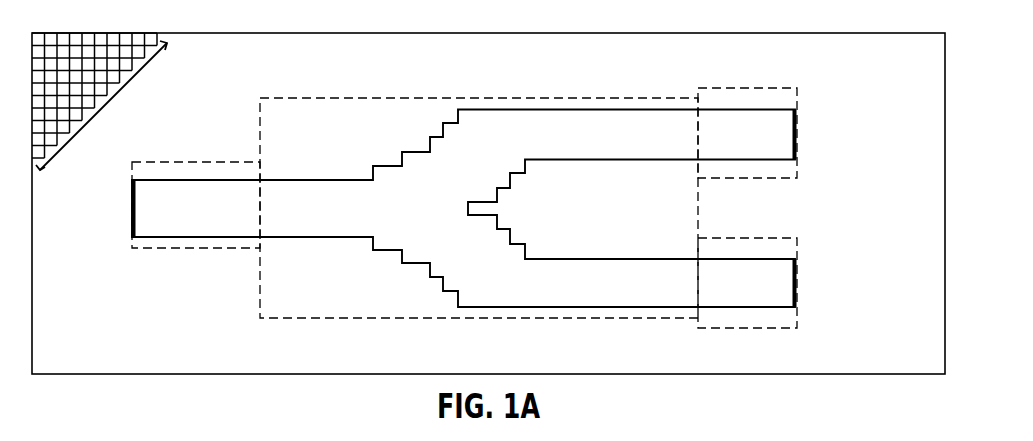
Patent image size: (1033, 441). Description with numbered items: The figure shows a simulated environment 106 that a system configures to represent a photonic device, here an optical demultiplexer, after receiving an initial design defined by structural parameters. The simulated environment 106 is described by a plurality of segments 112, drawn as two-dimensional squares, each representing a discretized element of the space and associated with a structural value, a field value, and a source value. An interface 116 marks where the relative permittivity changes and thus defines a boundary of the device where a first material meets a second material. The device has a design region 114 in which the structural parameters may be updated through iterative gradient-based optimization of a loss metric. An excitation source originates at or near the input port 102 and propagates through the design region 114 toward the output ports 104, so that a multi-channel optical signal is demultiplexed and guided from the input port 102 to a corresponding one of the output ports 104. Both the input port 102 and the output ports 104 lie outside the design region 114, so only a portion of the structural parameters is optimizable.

The input port 102 is at (172, 250).
The output ports 104 is at (765, 178).
The simulated environment 106 is at (96, 22).
The segments 112 is at (101, 109).
The design region 114 is at (479, 188).
The interface 116 is at (333, 239).